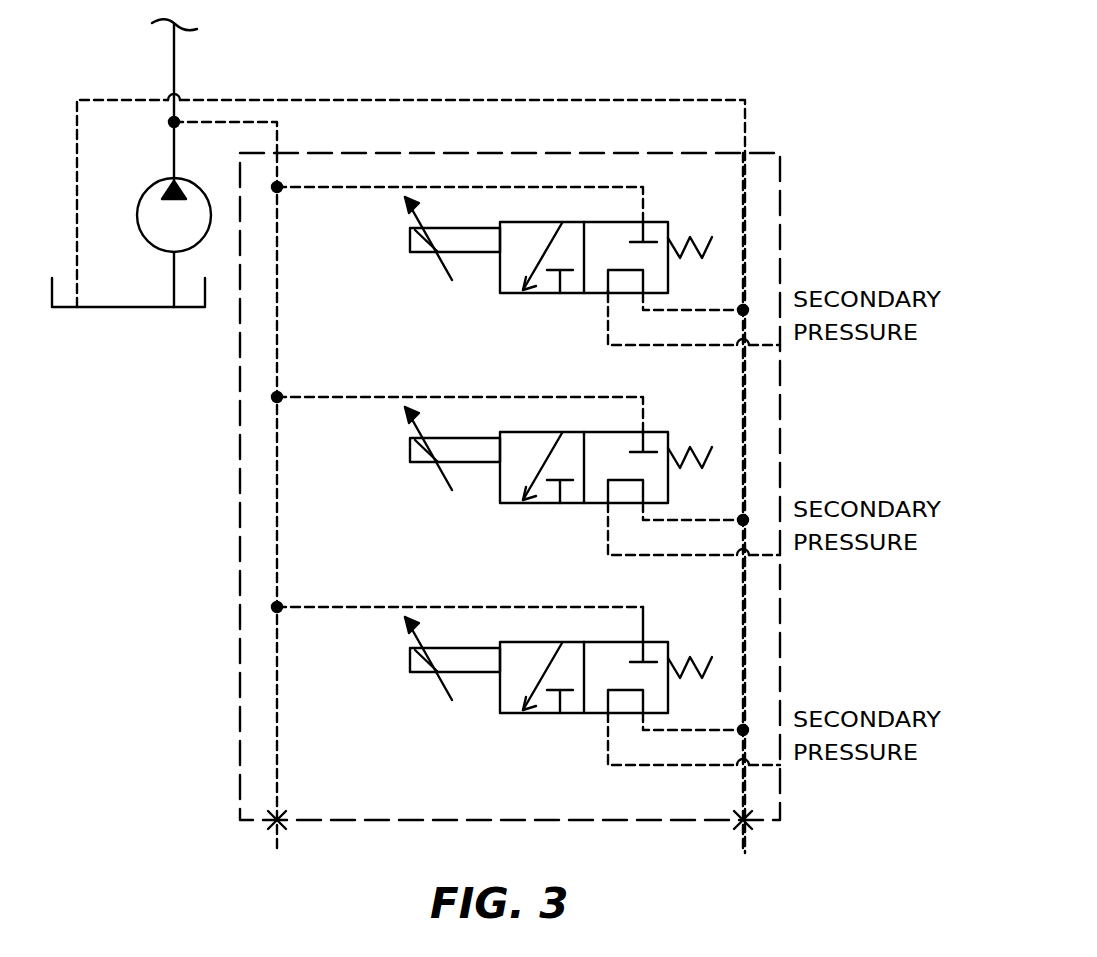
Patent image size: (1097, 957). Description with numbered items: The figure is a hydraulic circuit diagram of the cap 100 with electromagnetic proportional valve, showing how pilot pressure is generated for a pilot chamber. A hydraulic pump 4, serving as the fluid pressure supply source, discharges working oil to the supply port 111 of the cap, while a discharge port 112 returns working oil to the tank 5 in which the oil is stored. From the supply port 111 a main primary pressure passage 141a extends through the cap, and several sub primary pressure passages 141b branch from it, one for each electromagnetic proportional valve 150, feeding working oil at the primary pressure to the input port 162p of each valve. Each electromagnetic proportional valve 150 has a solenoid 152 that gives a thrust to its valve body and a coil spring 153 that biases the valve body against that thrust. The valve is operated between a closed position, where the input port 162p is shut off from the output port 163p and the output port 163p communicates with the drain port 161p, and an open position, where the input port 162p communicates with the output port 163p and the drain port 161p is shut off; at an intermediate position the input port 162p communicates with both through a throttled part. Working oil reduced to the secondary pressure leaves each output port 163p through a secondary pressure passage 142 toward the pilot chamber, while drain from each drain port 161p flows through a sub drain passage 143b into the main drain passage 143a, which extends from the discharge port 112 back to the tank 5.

The hydraulic pump 4 is at (158, 182).
The tank 5 is at (150, 307).
The cap 100 is at (240, 710).
The supply port 111 is at (277, 152).
The discharge port 112 is at (745, 152).
The main primary pressure passage 141a is at (273, 545).
The sub primary pressure passage 141b is at (432, 187).
The secondary pressure passage 142 is at (713, 347).
The main drain passage 143a is at (745, 460).
The sub drain passage 143b is at (713, 308).
The electromagnetic proportional valve 150 is at (573, 479).
The solenoid 152 is at (430, 254).
The coil spring 153 is at (707, 259).
The drain port 161p is at (645, 296).
The input port 162p is at (646, 220).
The output port 163p is at (608, 295).